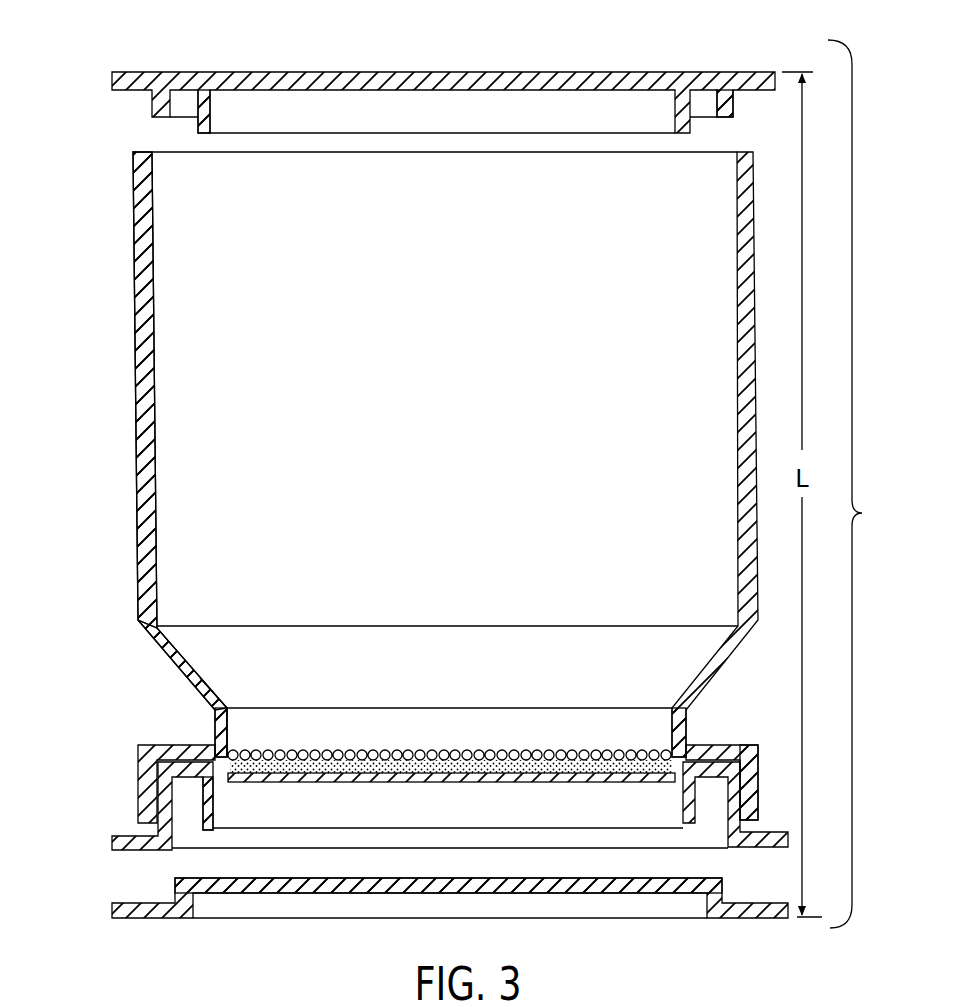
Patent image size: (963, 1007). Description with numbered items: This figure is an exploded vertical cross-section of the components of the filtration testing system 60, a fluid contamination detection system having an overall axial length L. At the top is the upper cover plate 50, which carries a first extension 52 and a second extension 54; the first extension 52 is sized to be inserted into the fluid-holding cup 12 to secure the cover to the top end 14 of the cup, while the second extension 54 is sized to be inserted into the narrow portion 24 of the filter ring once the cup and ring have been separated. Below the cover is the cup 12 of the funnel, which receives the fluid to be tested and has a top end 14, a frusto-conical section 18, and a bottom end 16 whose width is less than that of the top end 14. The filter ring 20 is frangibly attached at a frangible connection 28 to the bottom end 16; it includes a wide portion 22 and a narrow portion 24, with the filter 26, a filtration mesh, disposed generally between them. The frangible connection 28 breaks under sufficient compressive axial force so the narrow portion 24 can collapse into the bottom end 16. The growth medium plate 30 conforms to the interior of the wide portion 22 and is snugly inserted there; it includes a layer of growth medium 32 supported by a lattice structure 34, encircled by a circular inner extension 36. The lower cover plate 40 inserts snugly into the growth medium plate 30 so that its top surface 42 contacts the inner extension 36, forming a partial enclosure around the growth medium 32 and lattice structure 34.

The fluid-holding cup 12 is at (132, 383).
The top end 14 is at (133, 173).
The bottom end 16 is at (192, 705).
The frusto-conical section 18 is at (158, 660).
The filter ring 20 is at (136, 752).
The wide portion 22 is at (760, 770).
The narrow portion 24 is at (688, 736).
The filter 26 is at (486, 750).
The frangible connection 28 is at (220, 704).
The growth medium plate 30 is at (110, 842).
The growth medium 32 is at (372, 770).
The lattice structure 34 is at (470, 783).
The inner extension 36 is at (203, 830).
The lower cover plate 40 is at (110, 912).
The top surface 42 is at (540, 877).
The upper cover plate 50 is at (720, 68).
The first extension 52 is at (733, 110).
The second extension 54 is at (198, 130).
The filtration testing system 60 is at (862, 513).